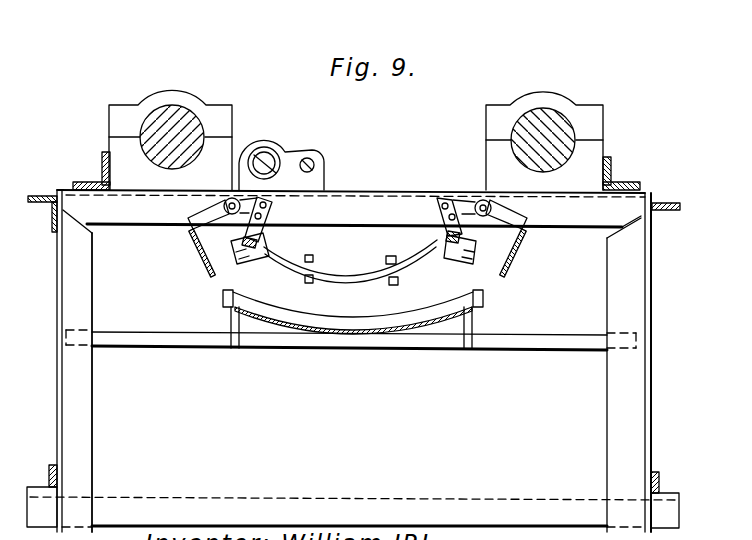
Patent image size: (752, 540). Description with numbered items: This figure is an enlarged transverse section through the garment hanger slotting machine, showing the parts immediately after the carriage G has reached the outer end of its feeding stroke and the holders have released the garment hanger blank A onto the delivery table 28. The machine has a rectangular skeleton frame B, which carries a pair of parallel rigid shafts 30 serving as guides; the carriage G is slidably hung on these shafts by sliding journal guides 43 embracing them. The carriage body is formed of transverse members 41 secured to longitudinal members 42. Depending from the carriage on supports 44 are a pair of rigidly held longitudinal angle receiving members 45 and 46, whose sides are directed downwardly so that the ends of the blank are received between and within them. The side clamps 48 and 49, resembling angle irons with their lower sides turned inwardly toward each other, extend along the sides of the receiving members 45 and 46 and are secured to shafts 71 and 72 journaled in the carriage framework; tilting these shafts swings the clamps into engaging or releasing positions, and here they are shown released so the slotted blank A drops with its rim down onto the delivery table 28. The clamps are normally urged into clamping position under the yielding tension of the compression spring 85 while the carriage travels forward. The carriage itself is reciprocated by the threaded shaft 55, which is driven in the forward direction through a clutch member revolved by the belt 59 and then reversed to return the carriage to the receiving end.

The rigid shaft 30 is at (170, 105).
The sliding journal guide 43 is at (230, 107).
The longitudinal member 42 is at (104, 172).
The threaded shaft 55 is at (264, 150).
The belt 59 is at (310, 157).
The shaft 71 is at (230, 197).
The shaft 72 is at (488, 200).
The dependent support 44 is at (273, 213).
The transverse member 41 is at (354, 214).
The side clamp 48 is at (190, 238).
The side clamp 49 is at (522, 245).
The longitudinal angle receiving member 45 is at (228, 243).
The longitudinal angle receiving member 46 is at (437, 243).
The compression spring 85 is at (350, 272).
The delivery table 28 is at (288, 326).
The garment hanger blank A is at (360, 323).
The frame B is at (82, 428).
The carriage G is at (389, 190).